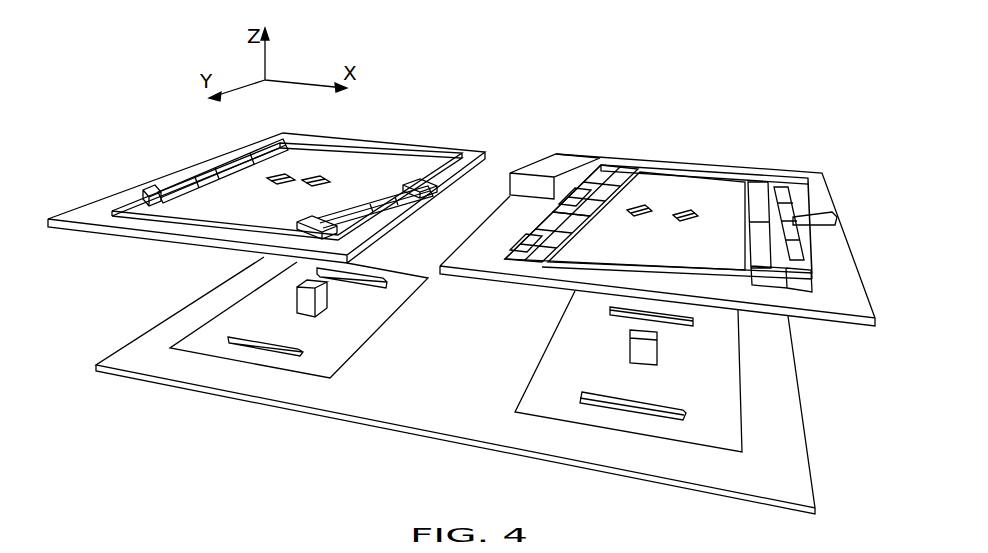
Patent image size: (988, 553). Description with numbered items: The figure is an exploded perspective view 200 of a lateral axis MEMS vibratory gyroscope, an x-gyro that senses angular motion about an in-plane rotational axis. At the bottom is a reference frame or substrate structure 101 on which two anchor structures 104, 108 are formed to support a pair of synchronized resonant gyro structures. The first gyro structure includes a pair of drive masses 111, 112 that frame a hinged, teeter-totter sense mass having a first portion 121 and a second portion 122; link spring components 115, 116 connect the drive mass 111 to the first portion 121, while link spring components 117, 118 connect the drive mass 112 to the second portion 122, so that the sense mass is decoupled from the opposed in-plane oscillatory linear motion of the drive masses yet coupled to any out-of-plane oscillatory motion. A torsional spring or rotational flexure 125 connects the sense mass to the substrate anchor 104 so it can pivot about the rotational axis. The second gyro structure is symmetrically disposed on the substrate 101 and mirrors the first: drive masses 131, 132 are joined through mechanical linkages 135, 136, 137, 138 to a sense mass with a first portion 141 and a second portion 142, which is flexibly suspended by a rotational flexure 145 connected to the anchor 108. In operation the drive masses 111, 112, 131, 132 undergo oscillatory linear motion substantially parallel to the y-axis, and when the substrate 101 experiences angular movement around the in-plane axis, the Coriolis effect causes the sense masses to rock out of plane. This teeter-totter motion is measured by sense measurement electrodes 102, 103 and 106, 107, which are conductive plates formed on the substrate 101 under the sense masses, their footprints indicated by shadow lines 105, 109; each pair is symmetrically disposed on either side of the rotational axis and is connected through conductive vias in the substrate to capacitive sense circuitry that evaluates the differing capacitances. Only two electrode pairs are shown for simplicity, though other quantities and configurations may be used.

The exploded perspective view 200 is at (689, 92).
The substrate structure 101 is at (95, 366).
The sense measurement electrode 102 is at (305, 351).
The sense measurement electrode 103 is at (387, 281).
The anchor structure 104 is at (327, 308).
The shadow lines 105 is at (374, 340).
The sense measurement electrode 106 is at (686, 413).
The sense measurement electrode 107 is at (692, 319).
The anchor structure 108 is at (658, 355).
The shadow lines 109 is at (744, 400).
The drive mass 111 is at (104, 202).
The drive mass 112 is at (263, 142).
The link spring component 115 is at (173, 187).
The link spring component 116 is at (374, 192).
The link spring component 117 is at (237, 153).
The link spring component 118 is at (417, 183).
The first portion of sense mass 121 is at (267, 208).
The second portion of sense mass 122 is at (362, 173).
The torsional spring 125 is at (295, 184).
The drive mass 131 is at (470, 248).
The drive mass 132 is at (560, 156).
The link spring component 135 is at (530, 232).
The link spring component 136 is at (822, 222).
The link spring component 137 is at (565, 177).
The link spring component 138 is at (778, 178).
The first portion of sense mass 141 is at (674, 253).
The second portion of sense mass 142 is at (724, 203).
The torsional spring 145 is at (677, 210).